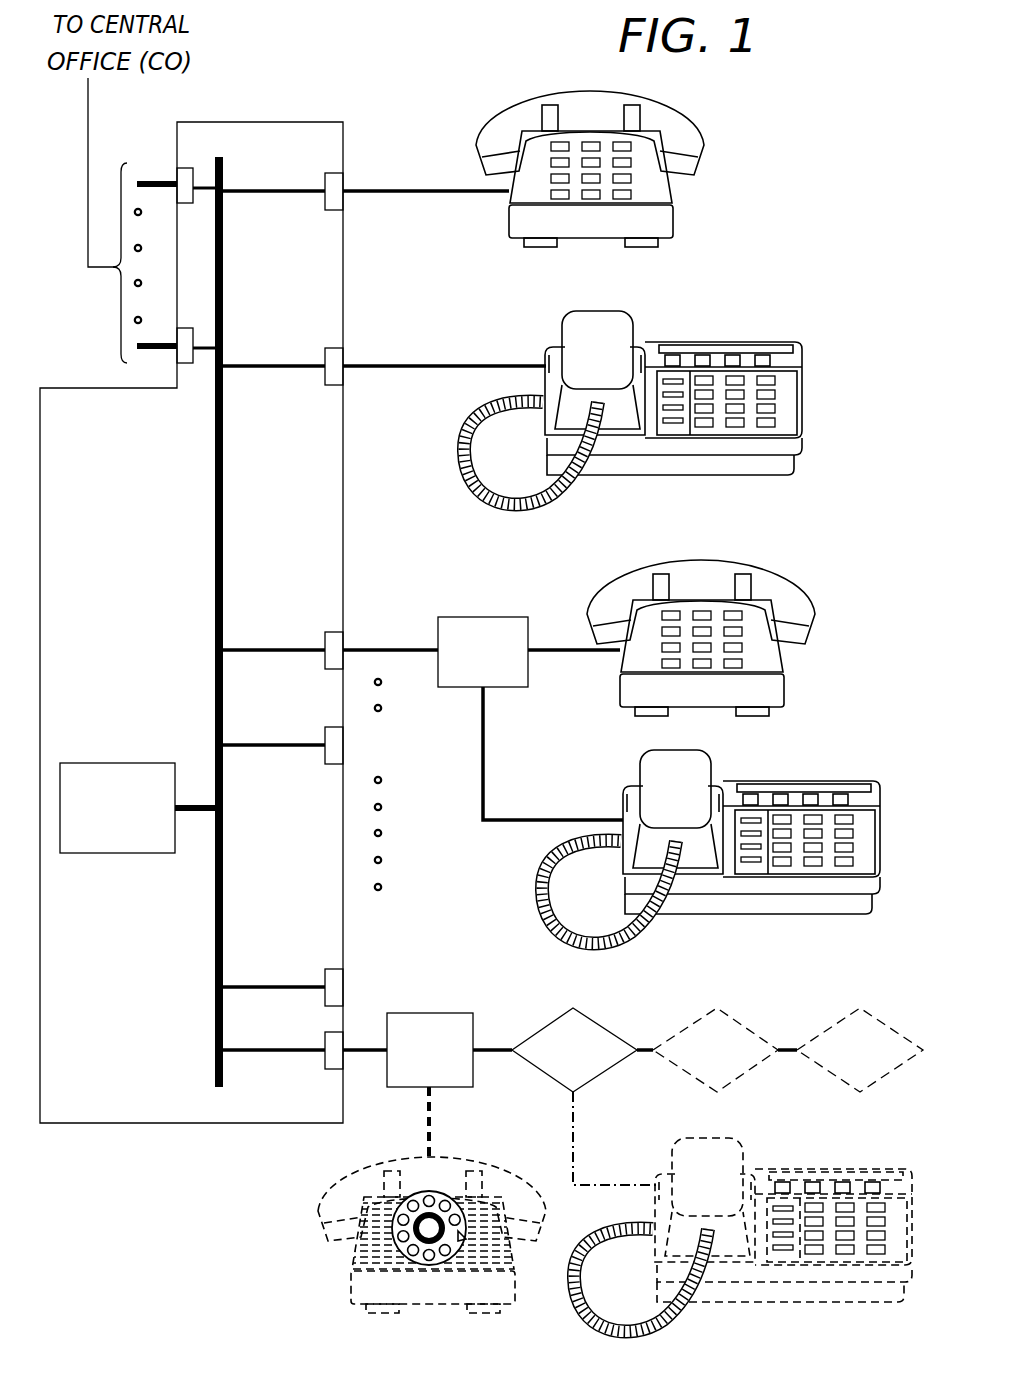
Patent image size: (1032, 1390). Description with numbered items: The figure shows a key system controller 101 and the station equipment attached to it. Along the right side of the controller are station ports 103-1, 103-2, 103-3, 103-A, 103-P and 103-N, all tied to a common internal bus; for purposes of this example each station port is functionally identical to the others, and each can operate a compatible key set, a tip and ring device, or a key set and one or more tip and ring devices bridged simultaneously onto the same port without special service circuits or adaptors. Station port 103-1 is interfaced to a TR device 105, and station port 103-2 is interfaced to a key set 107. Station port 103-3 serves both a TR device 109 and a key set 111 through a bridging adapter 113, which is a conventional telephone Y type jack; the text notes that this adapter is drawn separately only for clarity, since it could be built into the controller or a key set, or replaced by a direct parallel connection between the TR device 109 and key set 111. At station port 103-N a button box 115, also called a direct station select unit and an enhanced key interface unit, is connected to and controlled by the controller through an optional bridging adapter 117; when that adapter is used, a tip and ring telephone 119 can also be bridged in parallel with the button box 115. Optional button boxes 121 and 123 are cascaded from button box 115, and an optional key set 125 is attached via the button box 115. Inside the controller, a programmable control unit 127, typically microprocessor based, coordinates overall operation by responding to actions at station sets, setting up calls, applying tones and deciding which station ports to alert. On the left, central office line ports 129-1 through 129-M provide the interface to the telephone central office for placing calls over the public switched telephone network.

The key system controller 101 is at (268, 122).
The station port 103-1 is at (337, 188).
The station port 103-2 is at (340, 364).
The station port 103-3 is at (337, 648).
The station port 103-A is at (337, 740).
The station port 103-P is at (337, 978).
The station port 103-N is at (337, 1043).
The TR device 105 is at (696, 170).
The key set 107 is at (744, 351).
The TR device 109 is at (800, 608).
The key set 111 is at (825, 793).
The bridging adapter 113 is at (463, 617).
The button box 115 is at (557, 1025).
The bridging adapter 117 is at (425, 1013).
The tip and ring telephone 119 is at (355, 1275).
The button box 121 is at (692, 1023).
The button box 123 is at (825, 1067).
The key set 125 is at (792, 1173).
The programmable control unit 127 is at (113, 853).
The central office line port 129-1 is at (185, 175).
The central office line port 129-M is at (185, 366).